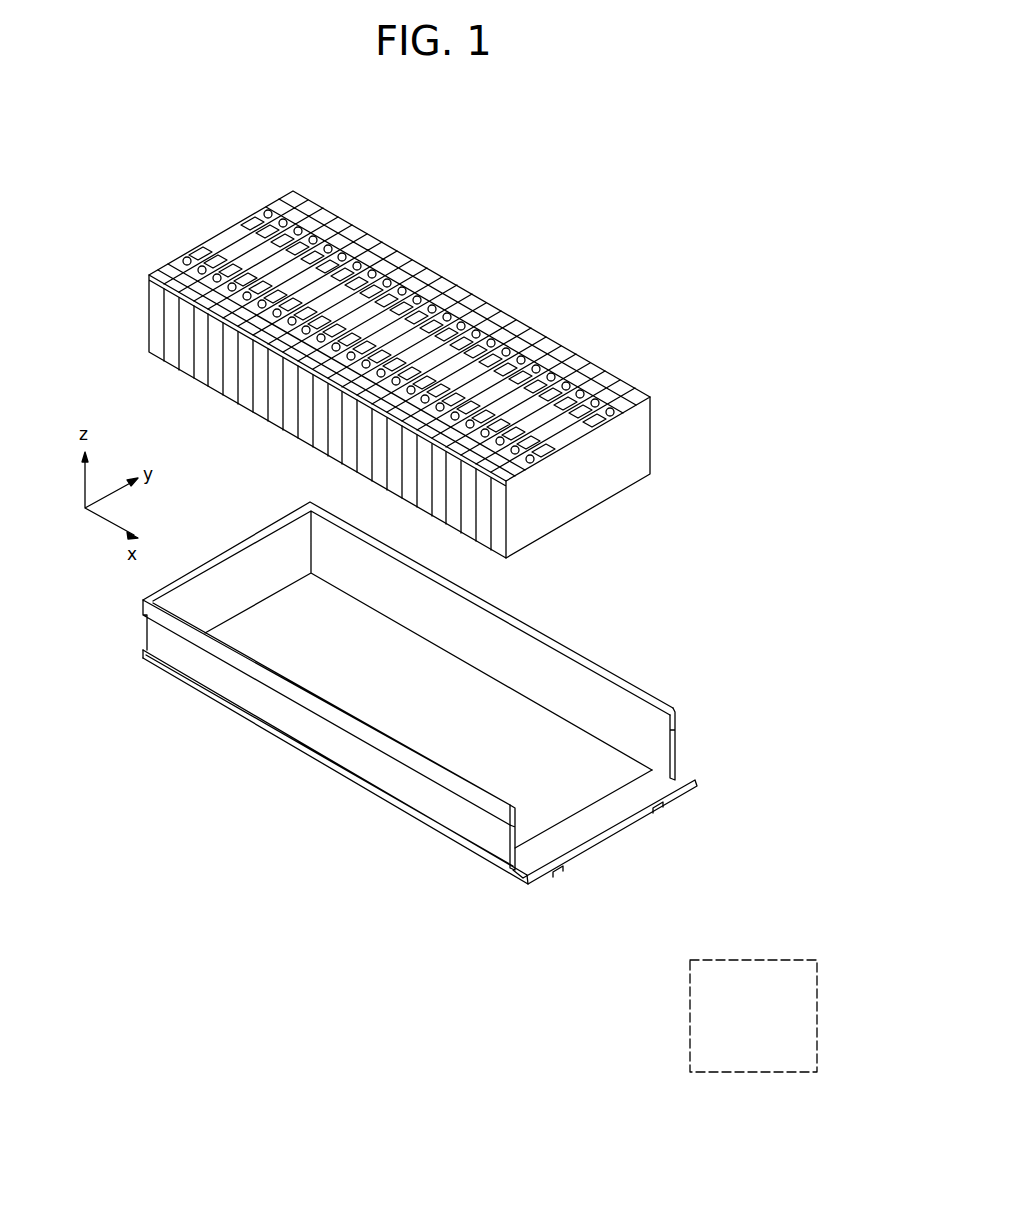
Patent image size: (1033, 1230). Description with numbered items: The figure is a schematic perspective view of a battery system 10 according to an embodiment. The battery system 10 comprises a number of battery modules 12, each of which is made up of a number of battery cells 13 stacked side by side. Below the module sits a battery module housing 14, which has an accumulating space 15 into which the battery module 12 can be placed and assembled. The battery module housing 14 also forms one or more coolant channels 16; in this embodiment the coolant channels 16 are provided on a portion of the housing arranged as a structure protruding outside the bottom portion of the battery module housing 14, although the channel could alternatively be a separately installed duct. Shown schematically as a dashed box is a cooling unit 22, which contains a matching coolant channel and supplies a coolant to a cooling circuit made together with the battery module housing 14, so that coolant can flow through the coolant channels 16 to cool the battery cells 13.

The battery system 10 is at (182, 182).
The battery module 12 is at (573, 348).
The battery cell 13 is at (623, 453).
The battery module housing 14 is at (383, 781).
The accumulating space 15 is at (558, 757).
The coolant channel 16 is at (605, 837).
The cooling unit 22 is at (758, 968).